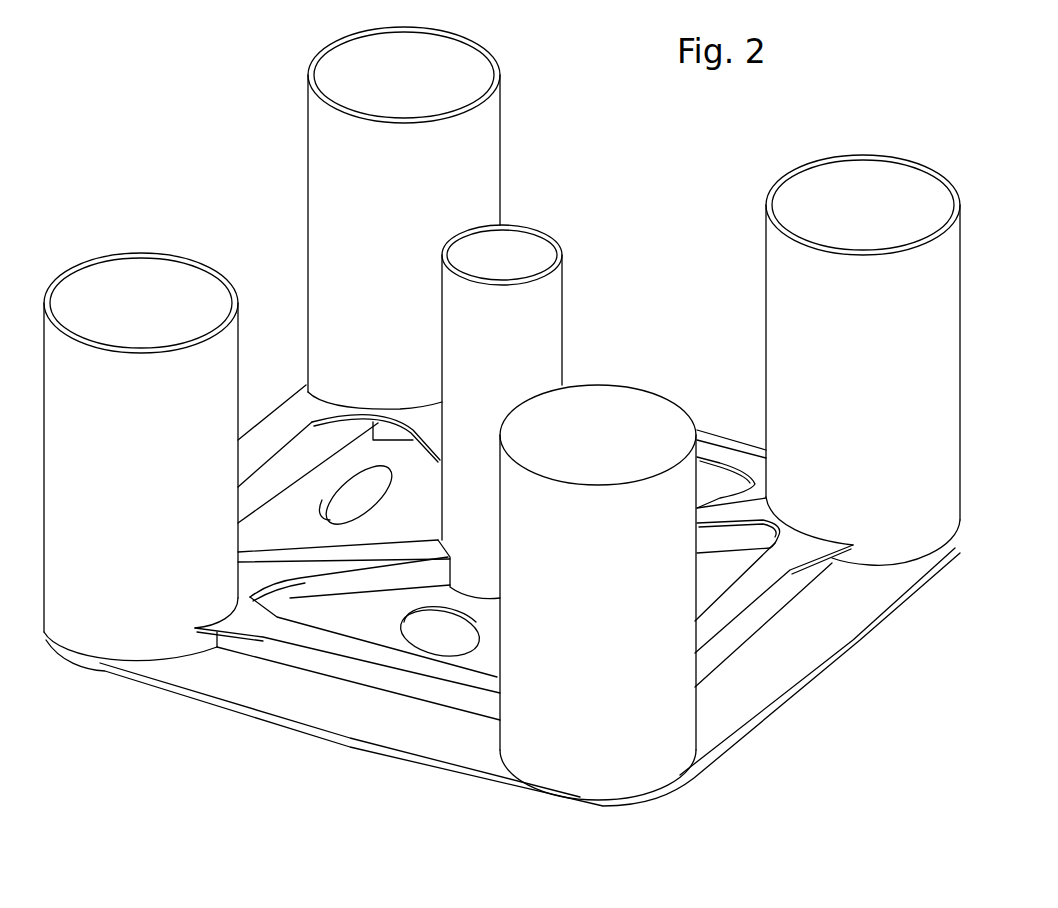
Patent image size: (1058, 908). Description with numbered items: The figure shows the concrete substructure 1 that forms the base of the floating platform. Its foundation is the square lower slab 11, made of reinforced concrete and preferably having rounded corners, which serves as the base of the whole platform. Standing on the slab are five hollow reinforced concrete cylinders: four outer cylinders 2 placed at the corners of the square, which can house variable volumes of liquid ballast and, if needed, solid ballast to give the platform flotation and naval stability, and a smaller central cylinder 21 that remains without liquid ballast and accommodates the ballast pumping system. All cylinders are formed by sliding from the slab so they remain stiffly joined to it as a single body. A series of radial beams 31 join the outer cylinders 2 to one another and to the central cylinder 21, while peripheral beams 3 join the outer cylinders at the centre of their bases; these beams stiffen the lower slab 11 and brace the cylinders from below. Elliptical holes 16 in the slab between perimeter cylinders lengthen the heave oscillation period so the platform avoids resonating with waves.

The concrete substructure 1 is at (677, 243).
The hollow reinforced concrete cylinder 2 is at (327, 184).
The central cylinder 21 is at (557, 237).
The peripheral beam 3 is at (735, 440).
The radial beam 31 is at (340, 590).
The hole 16 is at (357, 490).
The lower slab 11 is at (863, 618).